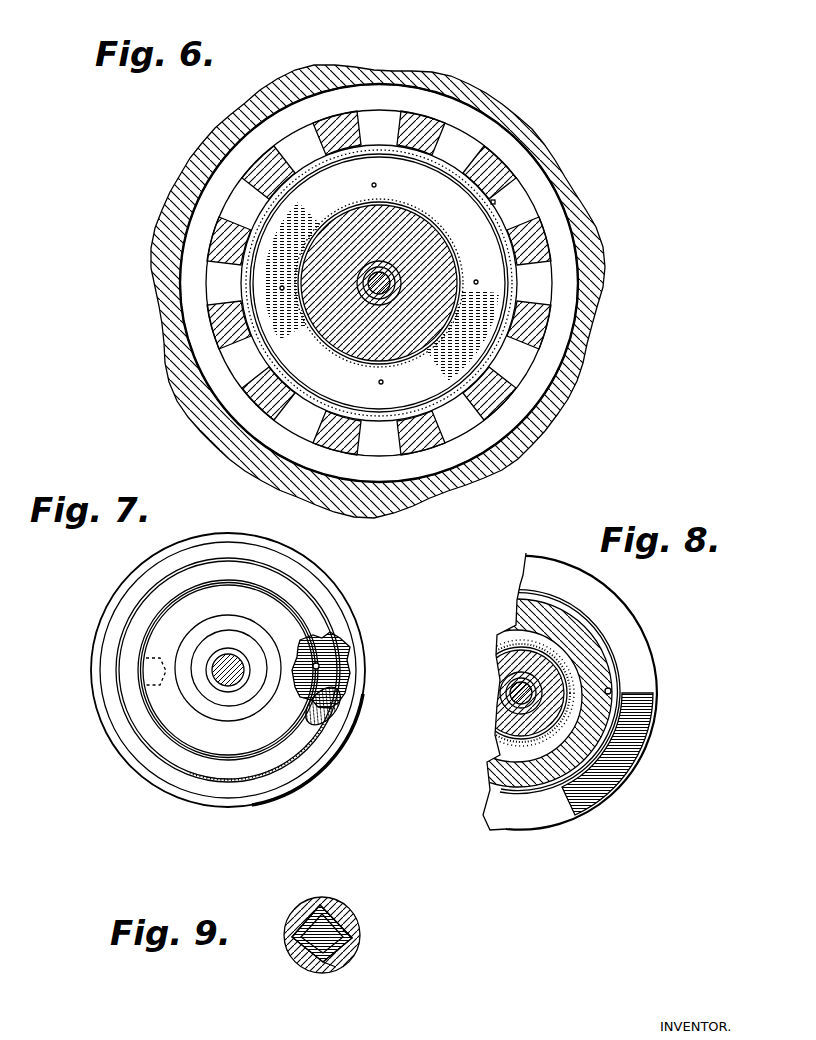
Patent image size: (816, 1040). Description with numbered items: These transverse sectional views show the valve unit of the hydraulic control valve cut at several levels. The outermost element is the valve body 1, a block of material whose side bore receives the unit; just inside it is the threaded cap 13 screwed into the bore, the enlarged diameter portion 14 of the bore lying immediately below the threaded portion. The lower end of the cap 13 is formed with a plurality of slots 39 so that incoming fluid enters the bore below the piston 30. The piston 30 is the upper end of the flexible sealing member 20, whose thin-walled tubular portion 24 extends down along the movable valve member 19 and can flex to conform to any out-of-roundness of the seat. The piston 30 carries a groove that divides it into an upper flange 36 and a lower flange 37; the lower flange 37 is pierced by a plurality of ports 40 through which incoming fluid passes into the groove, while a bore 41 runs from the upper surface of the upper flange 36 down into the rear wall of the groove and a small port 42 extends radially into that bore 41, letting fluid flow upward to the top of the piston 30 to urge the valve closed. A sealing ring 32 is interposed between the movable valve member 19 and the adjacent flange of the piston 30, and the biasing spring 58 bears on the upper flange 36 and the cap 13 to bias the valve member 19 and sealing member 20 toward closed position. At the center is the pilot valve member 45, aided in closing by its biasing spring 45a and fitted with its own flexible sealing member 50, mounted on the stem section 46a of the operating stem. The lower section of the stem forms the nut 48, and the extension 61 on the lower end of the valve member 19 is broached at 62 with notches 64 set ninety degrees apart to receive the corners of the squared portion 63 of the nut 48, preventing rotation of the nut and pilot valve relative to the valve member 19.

In FIG. 6, the valve body 1 is at (526, 96).
In FIG. 6, the cap 13 is at (213, 240).
In FIG. 6, the enlarged diameter portion 14 is at (570, 251).
In FIG. 6, the movable valve member 19 is at (352, 213).
In FIG. 7, the movable valve member 19 is at (283, 630).
In FIG. 8, the movable valve member 19 is at (508, 665).
In FIG. 6, the tubular portion 24 is at (430, 217).
In FIG. 6, the piston 30 is at (493, 203).
In FIG. 7, the piston 30 is at (363, 704).
In FIG. 8, the piston 30 is at (485, 775).
In FIG. 8, the sealing ring 32 is at (507, 630).
In FIG. 7, the upper flange 36 is at (327, 720).
In FIG. 8, the upper flange 36 is at (638, 643).
In FIG. 6, the lower flange 37 is at (483, 233).
In FIG. 6, the slots 39 is at (212, 287).
In FIG. 6, the ports 40 is at (374, 183).
In FIG. 7, the bore 41 is at (319, 665).
In FIG. 8, the bore 41 is at (613, 691).
In FIG. 8, the small port 42 is at (615, 693).
In FIG. 7, the pilot valve member 45 is at (238, 657).
In FIG. 6, the biasing spring 45a is at (377, 303).
In FIG. 8, the biasing spring 45a is at (505, 707).
In FIG. 6, the stem section 46a is at (383, 287).
In FIG. 8, the stem section 46a is at (519, 693).
In FIG. 9, the nut 48 is at (305, 965).
In FIG. 7, the flexible sealing member 50 is at (207, 655).
In FIG. 7, the biasing spring 58 is at (127, 692).
In FIG. 8, the flexible sealing member 20 is at (656, 722).
In FIG. 9, the extension 61 is at (336, 967).
In FIG. 9, the broached portion 62 is at (322, 906).
In FIG. 9, the squared portion 63 is at (350, 925).
In FIG. 9, the notches 64 is at (355, 938).